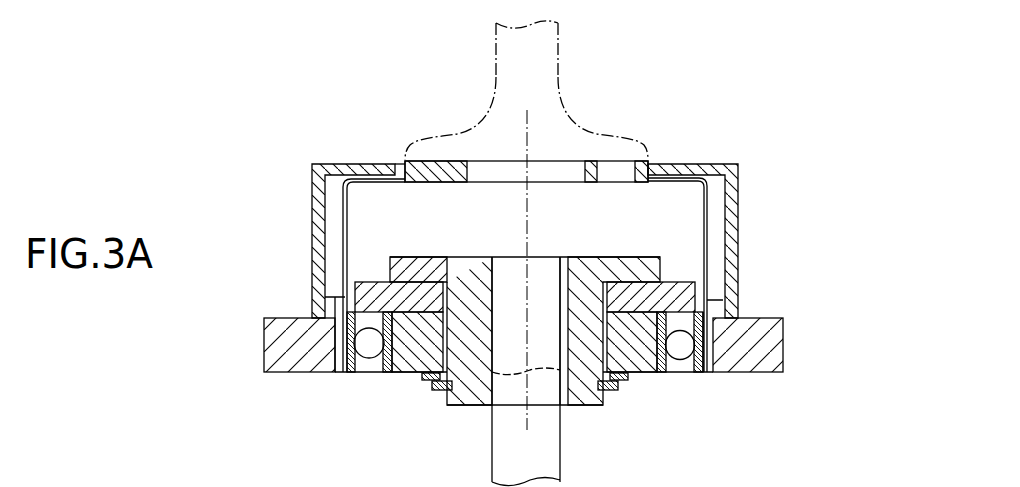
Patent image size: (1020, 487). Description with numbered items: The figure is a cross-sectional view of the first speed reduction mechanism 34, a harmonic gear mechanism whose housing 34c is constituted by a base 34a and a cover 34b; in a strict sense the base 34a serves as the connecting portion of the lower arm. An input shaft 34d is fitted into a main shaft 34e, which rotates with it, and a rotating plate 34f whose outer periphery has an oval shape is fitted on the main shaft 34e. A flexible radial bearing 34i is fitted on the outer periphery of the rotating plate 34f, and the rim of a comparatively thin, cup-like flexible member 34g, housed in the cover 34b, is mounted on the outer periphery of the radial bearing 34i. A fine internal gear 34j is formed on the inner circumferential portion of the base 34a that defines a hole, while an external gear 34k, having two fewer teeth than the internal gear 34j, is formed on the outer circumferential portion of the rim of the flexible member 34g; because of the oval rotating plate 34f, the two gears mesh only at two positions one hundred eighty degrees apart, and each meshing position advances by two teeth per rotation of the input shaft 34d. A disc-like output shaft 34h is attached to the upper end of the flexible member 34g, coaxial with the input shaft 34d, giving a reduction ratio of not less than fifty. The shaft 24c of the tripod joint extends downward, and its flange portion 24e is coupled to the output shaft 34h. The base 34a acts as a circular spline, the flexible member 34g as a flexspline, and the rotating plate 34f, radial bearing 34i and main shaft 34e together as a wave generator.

The shaft 24c is at (553, 52).
The flange portion 24e is at (605, 137).
The first speed reduction mechanism 34 is at (577, 276).
The base 34a is at (772, 342).
The cover 34b is at (738, 211).
The housing 34c is at (536, 356).
The input shaft 34d is at (547, 458).
The main shaft 34e is at (463, 392).
The rotating plate 34f is at (407, 357).
The flexible member 34g is at (346, 232).
The output shaft 34h is at (443, 167).
The radial bearing 34i is at (367, 350).
The internal gear 34j is at (346, 297).
The external gear 34k is at (712, 352).